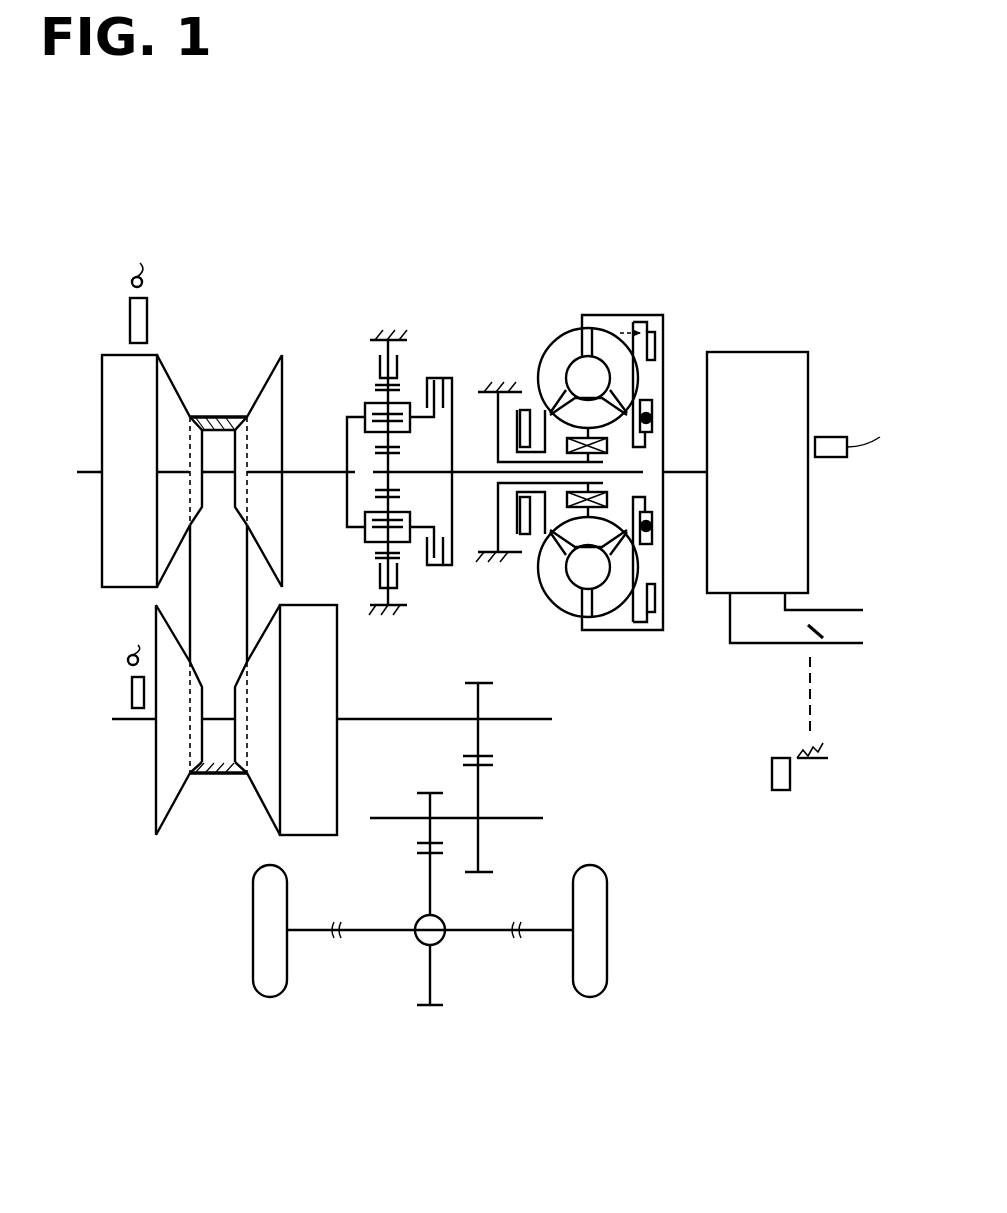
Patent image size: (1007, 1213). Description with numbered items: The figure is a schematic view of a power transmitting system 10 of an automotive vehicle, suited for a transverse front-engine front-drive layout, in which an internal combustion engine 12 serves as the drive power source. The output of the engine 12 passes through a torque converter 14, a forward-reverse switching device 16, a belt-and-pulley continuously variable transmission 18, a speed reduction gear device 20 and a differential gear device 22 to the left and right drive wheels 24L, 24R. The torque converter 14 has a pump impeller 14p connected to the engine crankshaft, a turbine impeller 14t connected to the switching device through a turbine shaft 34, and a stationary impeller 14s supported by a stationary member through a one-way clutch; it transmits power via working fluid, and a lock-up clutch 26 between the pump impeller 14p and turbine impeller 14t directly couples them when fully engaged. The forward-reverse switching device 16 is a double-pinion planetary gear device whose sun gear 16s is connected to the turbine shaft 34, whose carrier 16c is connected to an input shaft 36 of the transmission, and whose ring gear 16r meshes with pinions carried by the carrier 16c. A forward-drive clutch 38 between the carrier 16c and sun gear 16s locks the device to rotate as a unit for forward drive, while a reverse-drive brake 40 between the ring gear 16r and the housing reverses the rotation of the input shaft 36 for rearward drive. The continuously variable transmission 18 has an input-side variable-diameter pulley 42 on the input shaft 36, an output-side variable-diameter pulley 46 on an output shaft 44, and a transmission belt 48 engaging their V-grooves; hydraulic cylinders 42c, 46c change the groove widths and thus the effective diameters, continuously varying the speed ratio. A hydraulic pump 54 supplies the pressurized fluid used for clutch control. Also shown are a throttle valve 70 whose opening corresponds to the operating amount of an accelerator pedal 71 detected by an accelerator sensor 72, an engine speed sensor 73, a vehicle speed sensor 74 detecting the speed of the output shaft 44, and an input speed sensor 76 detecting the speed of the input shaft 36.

The power transmitting system 10 is at (762, 288).
The engine 12 is at (797, 423).
The torque converter 14 is at (590, 298).
The pump impeller 14p is at (555, 593).
The turbine impeller 14t is at (605, 600).
The stationary impeller 14s is at (556, 424).
The forward-reverse switching device 16 is at (323, 337).
The carrier 16c is at (365, 405).
The sun gear 16s is at (380, 483).
The ring gear 16r is at (377, 565).
The continuously variable transmission 18 is at (212, 847).
The speed reduction gear device 20 is at (555, 780).
The differential gear device 22 is at (425, 933).
The left drive wheel 24L is at (260, 958).
The right drive wheel 24R is at (598, 948).
The lock-up clutch 26 is at (665, 338).
The turbine shaft 34 is at (463, 475).
The input shaft 36 is at (310, 472).
The forward-drive clutch 38 is at (430, 568).
The reverse-drive brake 40 is at (378, 352).
The input-side variable-diameter pulley 42 is at (112, 378).
The hydraulic cylinder 42c is at (122, 452).
The output shaft 44 is at (405, 722).
The output-side variable-diameter pulley 46 is at (330, 698).
The hydraulic cylinder 46c is at (303, 833).
The transmission belt 48 is at (220, 417).
The hydraulic pump 54 is at (540, 416).
The throttle valve 70 is at (805, 618).
The accelerator pedal 71 is at (813, 740).
The accelerator sensor 72 is at (778, 782).
The engine speed sensor 73 is at (830, 457).
The vehicle speed sensor 74 is at (132, 693).
The input speed sensor 76 is at (140, 317).